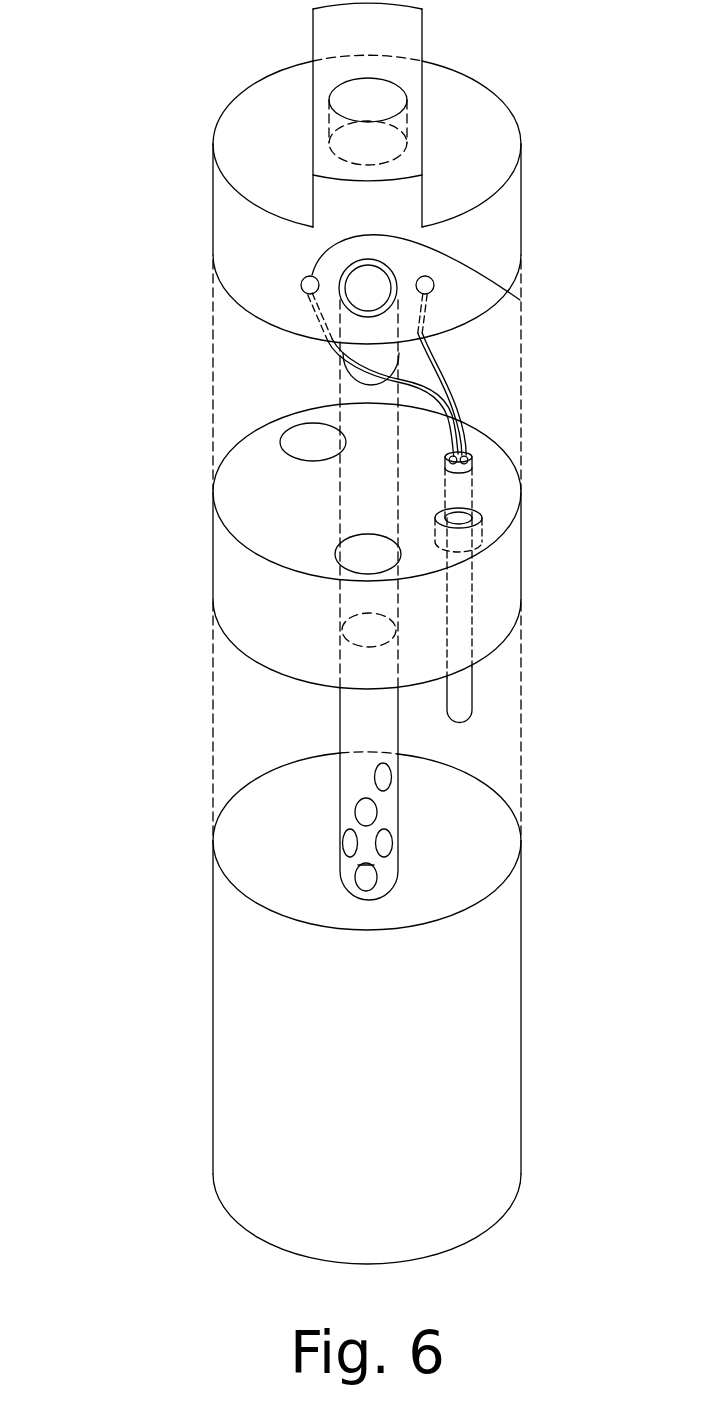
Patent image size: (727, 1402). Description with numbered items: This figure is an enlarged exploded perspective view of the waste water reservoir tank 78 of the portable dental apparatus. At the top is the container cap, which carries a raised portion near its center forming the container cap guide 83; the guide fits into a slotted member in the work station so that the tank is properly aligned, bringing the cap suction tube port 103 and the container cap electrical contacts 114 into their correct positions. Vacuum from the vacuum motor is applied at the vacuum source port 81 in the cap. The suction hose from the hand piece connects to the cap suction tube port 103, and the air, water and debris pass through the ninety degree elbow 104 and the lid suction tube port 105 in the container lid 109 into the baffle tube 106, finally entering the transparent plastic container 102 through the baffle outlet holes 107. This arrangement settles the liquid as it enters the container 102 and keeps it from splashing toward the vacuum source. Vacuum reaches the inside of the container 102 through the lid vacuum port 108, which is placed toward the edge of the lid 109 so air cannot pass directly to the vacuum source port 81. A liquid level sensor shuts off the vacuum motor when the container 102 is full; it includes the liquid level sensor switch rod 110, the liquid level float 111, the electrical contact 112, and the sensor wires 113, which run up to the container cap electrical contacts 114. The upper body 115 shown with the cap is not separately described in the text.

The waste water reservoir tank 78 is at (140, 118).
The vacuum source port 81 is at (392, 100).
The container cap guide 83 is at (407, 172).
The upper cylindrical cap 115 is at (505, 228).
The container cap electrical contacts 114 is at (434, 288).
The cap suction tube port 103 is at (349, 306).
The sensor wires 113 is at (433, 388).
The 90 degree elbow 104 is at (350, 376).
The electrical contact 112 is at (463, 452).
The lid vacuum port 108 is at (288, 444).
The liquid level float 111 is at (474, 538).
The liquid level sensor switch rod 110 is at (464, 588).
The lid suction tube port 105 is at (350, 561).
The container lid 109 is at (500, 627).
The baffle tube 106 is at (394, 738).
The baffle outlet holes 107 is at (370, 880).
The plastic container 102 is at (510, 942).